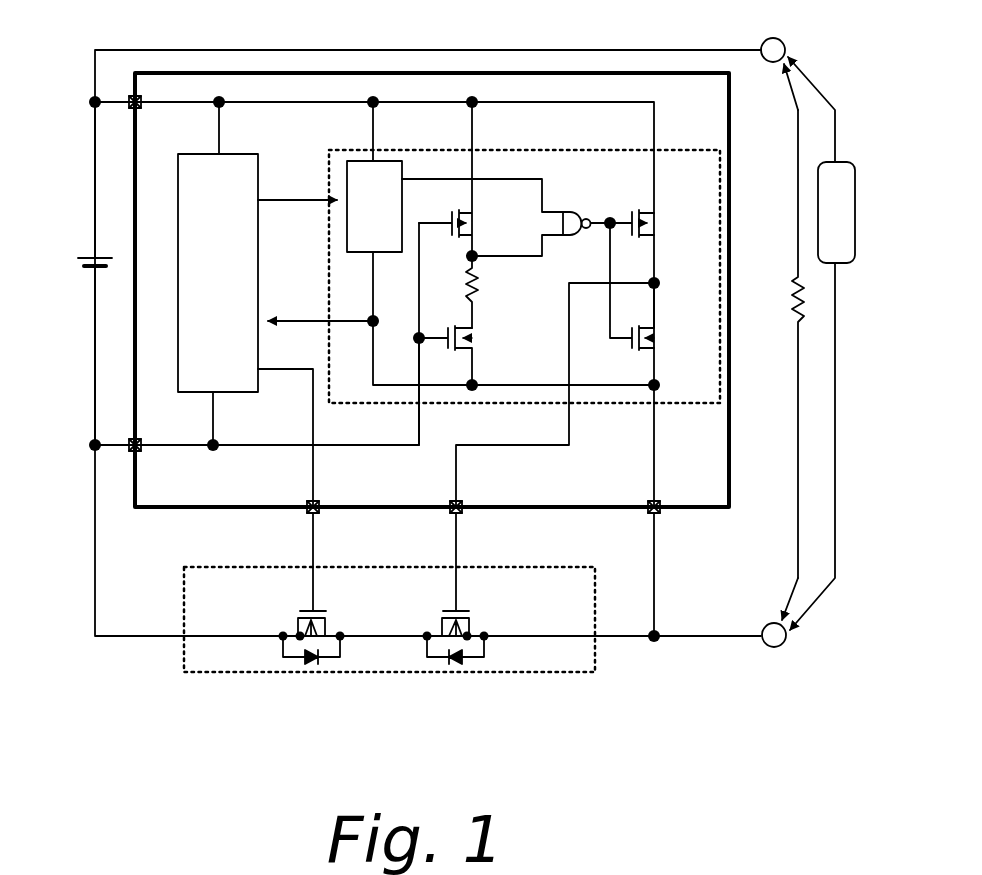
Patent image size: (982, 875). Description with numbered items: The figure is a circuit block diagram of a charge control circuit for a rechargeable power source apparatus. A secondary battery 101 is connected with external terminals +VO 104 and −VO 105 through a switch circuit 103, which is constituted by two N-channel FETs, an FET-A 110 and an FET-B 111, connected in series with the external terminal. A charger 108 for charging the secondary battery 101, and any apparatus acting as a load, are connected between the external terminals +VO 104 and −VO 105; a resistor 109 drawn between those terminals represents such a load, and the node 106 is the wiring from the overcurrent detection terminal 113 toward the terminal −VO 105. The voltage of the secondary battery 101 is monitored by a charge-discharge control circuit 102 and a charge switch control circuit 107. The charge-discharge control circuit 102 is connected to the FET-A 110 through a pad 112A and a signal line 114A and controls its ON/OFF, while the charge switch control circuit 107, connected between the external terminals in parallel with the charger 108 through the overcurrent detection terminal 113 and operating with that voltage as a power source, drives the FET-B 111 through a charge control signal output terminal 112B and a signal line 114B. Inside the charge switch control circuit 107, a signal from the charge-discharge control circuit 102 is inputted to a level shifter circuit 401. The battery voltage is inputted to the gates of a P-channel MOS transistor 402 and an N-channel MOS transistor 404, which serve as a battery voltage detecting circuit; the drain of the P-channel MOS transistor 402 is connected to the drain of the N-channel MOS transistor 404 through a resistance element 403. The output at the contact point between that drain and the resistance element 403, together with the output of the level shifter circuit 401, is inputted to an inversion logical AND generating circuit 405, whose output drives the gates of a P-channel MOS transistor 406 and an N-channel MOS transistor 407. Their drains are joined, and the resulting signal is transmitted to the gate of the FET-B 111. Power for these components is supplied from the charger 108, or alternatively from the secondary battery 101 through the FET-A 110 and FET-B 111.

The secondary battery 101 is at (78, 258).
The charge-discharge control circuit 102 is at (178, 208).
The switch circuit 103 is at (183, 650).
The external terminal +VO 104 is at (775, 38).
The external terminal −VO 105 is at (767, 647).
The wiring node 106 is at (658, 596).
The charge switch control circuit 107 is at (632, 150).
The charger 108 is at (818, 196).
The load resistor 109 is at (773, 297).
The FET-A 110 is at (292, 622).
The FET-B 111 is at (486, 622).
The pad 112A is at (318, 498).
The charge control signal output terminal 112B is at (461, 498).
The overcurrent detection terminal 113 is at (661, 503).
The signal line 114A is at (318, 542).
The signal line 114B is at (462, 543).
The level shifter circuit 401 is at (365, 170).
The P-channel MOS transistor 402 is at (476, 230).
The resistance element 403 is at (506, 283).
The N-channel MOS transistor 404 is at (476, 345).
The inversion logical AND generating circuit 405 is at (586, 213).
The P-channel MOS transistor 406 is at (658, 230).
The N-channel MOS transistor 407 is at (658, 345).